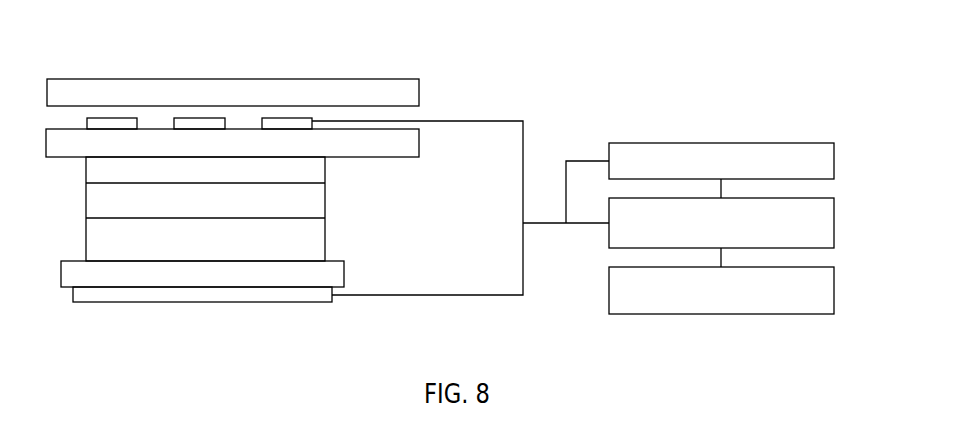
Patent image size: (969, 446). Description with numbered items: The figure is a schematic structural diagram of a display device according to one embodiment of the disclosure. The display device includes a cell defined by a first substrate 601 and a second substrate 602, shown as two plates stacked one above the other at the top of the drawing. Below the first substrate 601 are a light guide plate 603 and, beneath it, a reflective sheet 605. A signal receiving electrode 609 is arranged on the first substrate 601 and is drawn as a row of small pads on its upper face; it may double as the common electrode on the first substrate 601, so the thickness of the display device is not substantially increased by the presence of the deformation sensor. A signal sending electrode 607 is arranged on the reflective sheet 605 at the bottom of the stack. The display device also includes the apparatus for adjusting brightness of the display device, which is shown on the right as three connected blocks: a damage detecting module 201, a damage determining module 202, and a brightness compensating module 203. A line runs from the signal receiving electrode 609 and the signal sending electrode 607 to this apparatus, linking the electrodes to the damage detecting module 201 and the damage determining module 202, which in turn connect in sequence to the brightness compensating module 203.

The first substrate 601 is at (406, 148).
The second substrate 602 is at (400, 88).
The light guide plate 603 is at (307, 243).
The reflective sheet 605 is at (332, 275).
The signal sending electrode 607 is at (258, 294).
The signal receiving electrode 609 is at (293, 122).
The damage detecting module 201 is at (835, 162).
The damage determining module 202 is at (835, 222).
The brightness compensating module 203 is at (835, 290).